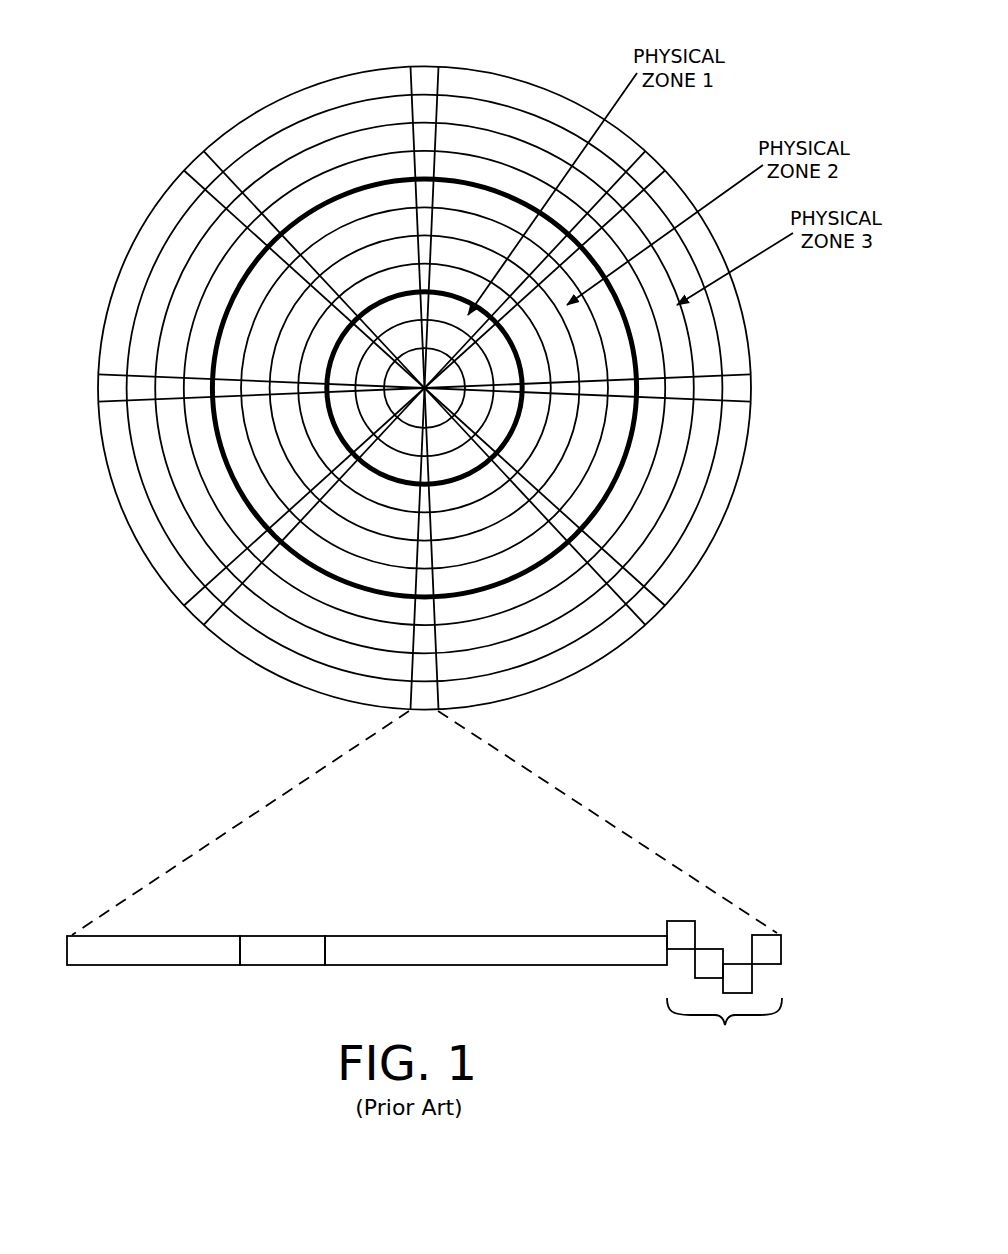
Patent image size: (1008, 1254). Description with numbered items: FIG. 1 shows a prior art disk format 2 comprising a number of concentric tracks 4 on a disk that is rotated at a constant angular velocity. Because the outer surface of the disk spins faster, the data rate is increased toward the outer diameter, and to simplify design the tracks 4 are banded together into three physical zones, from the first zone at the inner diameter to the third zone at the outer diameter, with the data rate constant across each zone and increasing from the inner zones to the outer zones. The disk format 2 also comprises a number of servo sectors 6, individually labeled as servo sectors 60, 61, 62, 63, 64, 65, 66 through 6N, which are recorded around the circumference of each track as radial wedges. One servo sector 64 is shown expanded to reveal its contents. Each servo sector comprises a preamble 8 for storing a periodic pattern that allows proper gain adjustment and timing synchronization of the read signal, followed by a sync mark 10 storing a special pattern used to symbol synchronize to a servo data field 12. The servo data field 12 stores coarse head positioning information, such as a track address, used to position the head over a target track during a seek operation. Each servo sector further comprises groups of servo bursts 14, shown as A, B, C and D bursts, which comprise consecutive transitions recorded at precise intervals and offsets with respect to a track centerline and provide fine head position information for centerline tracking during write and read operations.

The disk format 2 is at (426, 400).
The tracks 4 is at (533, 133).
The servo sectors 6 is at (426, 400).
The servo sector 60 is at (425, 75).
The servo sector 61 is at (647, 167).
The servo sector 62 is at (743, 390).
The servo sector 63 is at (645, 608).
The servo sector 64 is at (280, 792).
The servo sector 65 is at (195, 623).
The servo sector 66 is at (101, 387).
The servo sector 6N is at (274, 247).
The preamble 8 is at (132, 965).
The sync mark 10 is at (278, 965).
The servo data field 12 is at (482, 965).
The servo bursts 14 is at (655, 905).